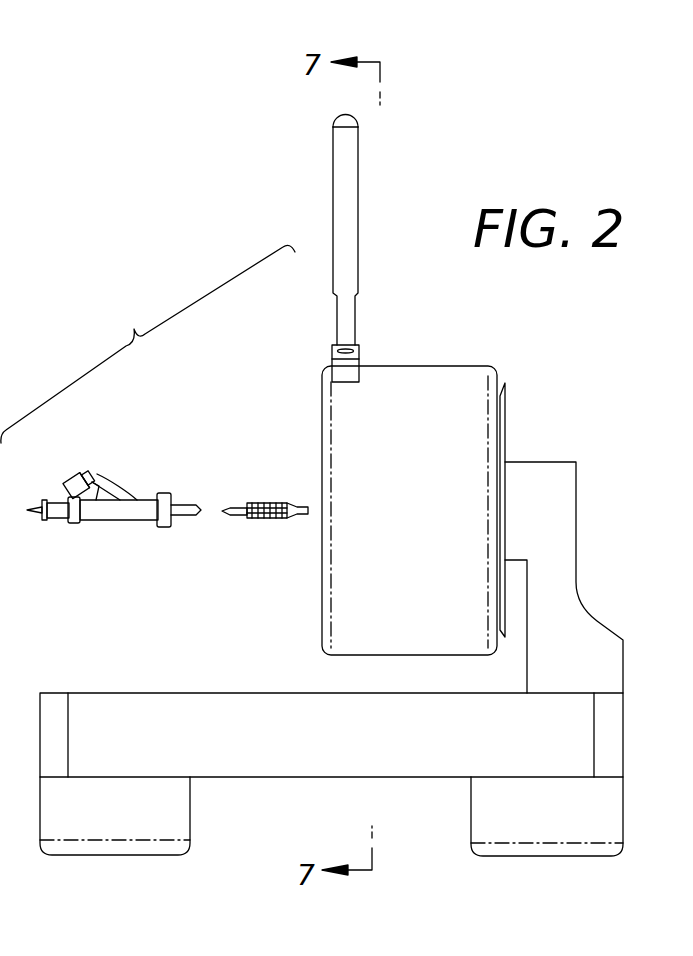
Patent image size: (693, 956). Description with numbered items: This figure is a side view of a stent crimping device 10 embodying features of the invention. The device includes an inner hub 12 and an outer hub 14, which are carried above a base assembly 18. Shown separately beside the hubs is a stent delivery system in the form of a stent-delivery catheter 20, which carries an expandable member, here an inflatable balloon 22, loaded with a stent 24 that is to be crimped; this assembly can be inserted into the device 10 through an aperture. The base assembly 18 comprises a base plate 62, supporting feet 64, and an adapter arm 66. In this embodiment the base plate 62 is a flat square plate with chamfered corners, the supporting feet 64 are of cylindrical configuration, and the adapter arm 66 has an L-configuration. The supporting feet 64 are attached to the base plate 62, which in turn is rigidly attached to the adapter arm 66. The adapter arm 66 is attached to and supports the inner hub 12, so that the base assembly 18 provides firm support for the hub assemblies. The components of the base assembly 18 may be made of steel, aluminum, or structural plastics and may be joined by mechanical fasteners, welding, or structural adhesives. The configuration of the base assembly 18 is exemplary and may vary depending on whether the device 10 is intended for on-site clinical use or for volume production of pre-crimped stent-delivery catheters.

The stent crimping device 10 is at (549, 351).
The inner hub 12 is at (512, 420).
The outer hub 14 is at (316, 432).
The base assembly 18 is at (630, 720).
The stent-delivery catheter 20 is at (128, 520).
The inflatable balloon 22 is at (245, 503).
The stent 24 is at (248, 527).
The base plate 62 is at (40, 740).
The supporting feet 64 is at (537, 858).
The adapter arm 66 is at (578, 545).